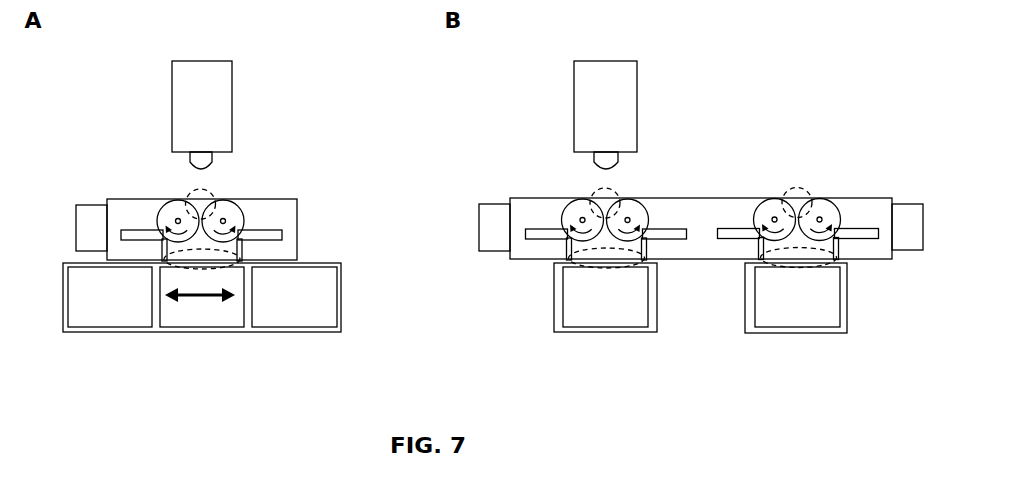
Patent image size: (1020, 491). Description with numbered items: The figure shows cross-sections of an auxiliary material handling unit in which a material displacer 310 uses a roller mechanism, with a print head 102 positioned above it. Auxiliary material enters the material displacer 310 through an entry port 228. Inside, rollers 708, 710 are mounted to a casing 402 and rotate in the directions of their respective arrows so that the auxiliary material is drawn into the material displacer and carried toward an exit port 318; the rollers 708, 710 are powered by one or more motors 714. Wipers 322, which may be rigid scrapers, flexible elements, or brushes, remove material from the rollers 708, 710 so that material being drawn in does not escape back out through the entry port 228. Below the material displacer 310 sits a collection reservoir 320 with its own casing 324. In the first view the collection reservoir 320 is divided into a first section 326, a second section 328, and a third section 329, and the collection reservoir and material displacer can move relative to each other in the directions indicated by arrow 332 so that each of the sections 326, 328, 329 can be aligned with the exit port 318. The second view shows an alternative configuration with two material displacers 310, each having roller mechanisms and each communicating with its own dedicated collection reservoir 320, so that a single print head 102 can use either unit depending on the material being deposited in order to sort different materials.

In FIG. 7A, the print head 102 is at (161, 80).
In FIG. 7B, the print head 102 is at (562, 96).
In FIG. 7A, the entry port 228 is at (197, 193).
In FIG. 7B, the entry port 228 is at (618, 193).
In FIG. 7A, the material displacer 310 is at (160, 198).
In FIG. 7B, the material displacer 310 is at (557, 180).
In FIG. 7A, the exit port 318 is at (228, 252).
In FIG. 7B, the exit port 318 is at (580, 267).
In FIG. 7A, the collection reservoir 320 is at (194, 330).
In FIG. 7B, the collection reservoir 320 is at (650, 329).
In FIG. 7A, the wipers 322 is at (143, 232).
In FIG. 7A, the casing 324 is at (341, 303).
In FIG. 7A, the first section 326 is at (103, 320).
In FIG. 7A, the second section 328 is at (207, 323).
In FIG. 7A, the third section 329 is at (293, 319).
In FIG. 7A, the arrow 332 is at (192, 298).
In FIG. 7A, the casing 402 is at (265, 205).
In FIG. 7A, the roller 708 is at (172, 205).
In FIG. 7A, the roller 710 is at (228, 205).
In FIG. 7A, the motor 714 is at (97, 208).